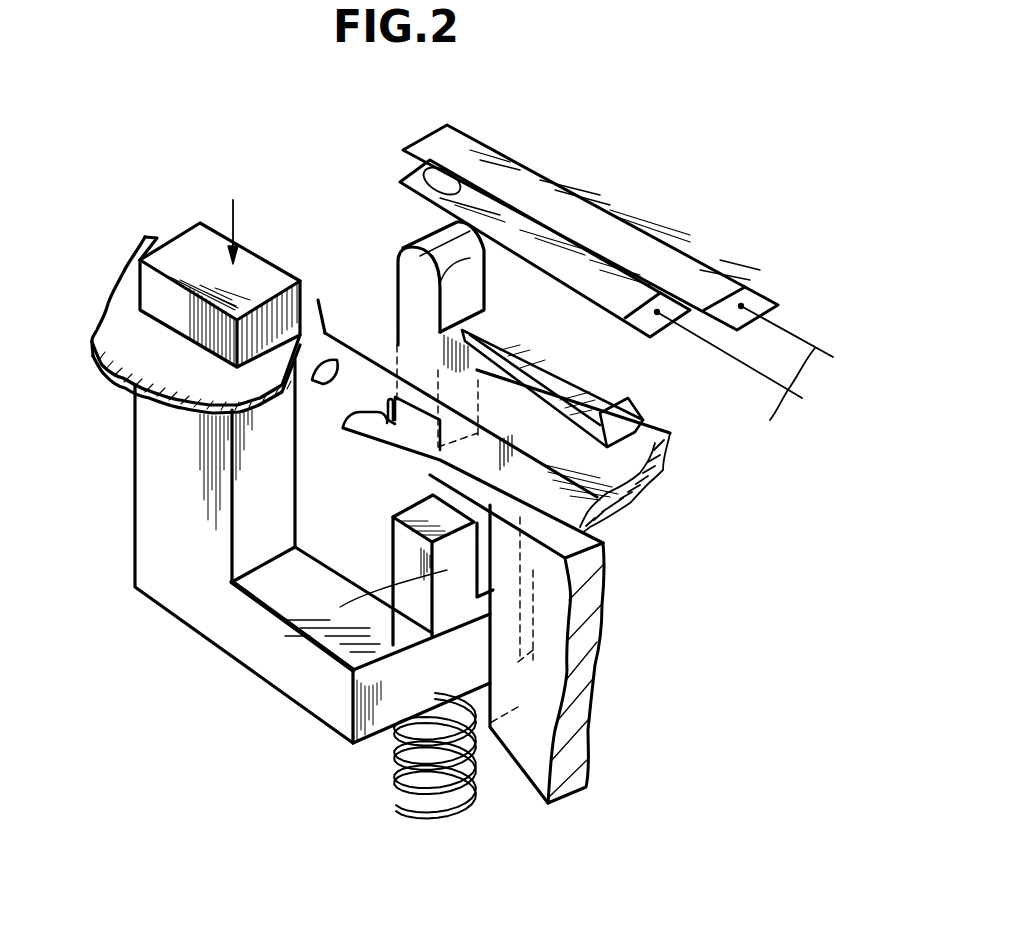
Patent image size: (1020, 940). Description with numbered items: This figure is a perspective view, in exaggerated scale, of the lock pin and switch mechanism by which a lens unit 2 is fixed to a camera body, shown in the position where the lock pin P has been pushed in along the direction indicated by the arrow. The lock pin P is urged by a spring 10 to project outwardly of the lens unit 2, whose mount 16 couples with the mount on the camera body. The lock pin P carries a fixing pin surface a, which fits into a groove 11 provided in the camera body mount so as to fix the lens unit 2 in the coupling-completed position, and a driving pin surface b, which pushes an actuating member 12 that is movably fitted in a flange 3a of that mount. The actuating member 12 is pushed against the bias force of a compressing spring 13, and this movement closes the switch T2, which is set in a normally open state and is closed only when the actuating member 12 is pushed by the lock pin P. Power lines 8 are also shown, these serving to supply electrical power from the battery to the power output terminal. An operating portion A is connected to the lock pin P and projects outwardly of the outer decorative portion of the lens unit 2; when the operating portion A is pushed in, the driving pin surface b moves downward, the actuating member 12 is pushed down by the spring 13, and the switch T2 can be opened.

The lens unit 2 is at (123, 286).
The operating portion A is at (180, 243).
The lock pin P is at (260, 648).
The fixing pin surface a is at (383, 591).
The driving pin surface b is at (428, 496).
The flange 3a is at (668, 455).
The groove 11 is at (350, 423).
The actuating member 12 is at (405, 300).
The compressing spring 13 is at (555, 385).
The switch T2 is at (600, 196).
The power lines 8 is at (770, 420).
The mount 16 is at (595, 630).
The spring 10 is at (425, 815).